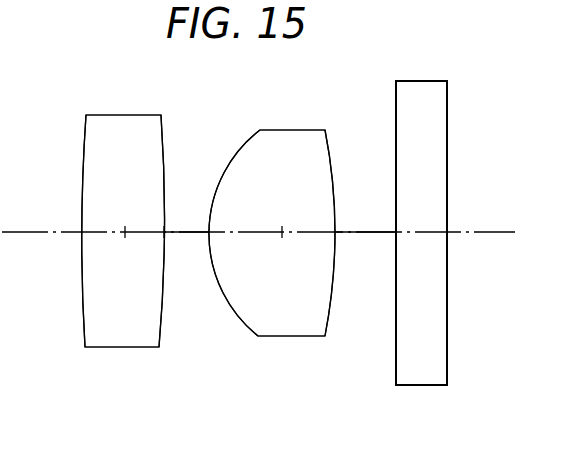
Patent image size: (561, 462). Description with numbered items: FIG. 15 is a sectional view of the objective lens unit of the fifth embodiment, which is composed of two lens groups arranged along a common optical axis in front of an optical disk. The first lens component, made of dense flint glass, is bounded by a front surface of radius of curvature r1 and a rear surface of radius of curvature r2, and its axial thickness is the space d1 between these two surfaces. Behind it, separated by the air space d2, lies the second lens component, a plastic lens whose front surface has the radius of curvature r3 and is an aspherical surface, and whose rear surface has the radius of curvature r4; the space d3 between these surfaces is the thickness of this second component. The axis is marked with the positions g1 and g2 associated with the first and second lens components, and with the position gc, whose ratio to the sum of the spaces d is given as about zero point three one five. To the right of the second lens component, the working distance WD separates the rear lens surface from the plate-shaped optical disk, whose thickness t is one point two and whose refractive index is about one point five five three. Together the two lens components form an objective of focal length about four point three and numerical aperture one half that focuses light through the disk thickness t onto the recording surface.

The space between lens surfaces d1 is at (126, 231).
The space between lens surfaces d2 is at (190, 231).
The space between lens surfaces d3 is at (241, 231).
The radius of curvature of lens surface r1 is at (85, 341).
The radius of curvature of lens surface r2 is at (160, 341).
The radius of curvature of lens surface r3 is at (250, 332).
The radius of curvature of lens surface r4 is at (326, 328).
The g1 value g1 is at (121, 244).
The gc value gc is at (153, 242).
The g2 value g2 is at (281, 245).
The working distance WD is at (362, 232).
The thickness of optical disk t is at (427, 232).